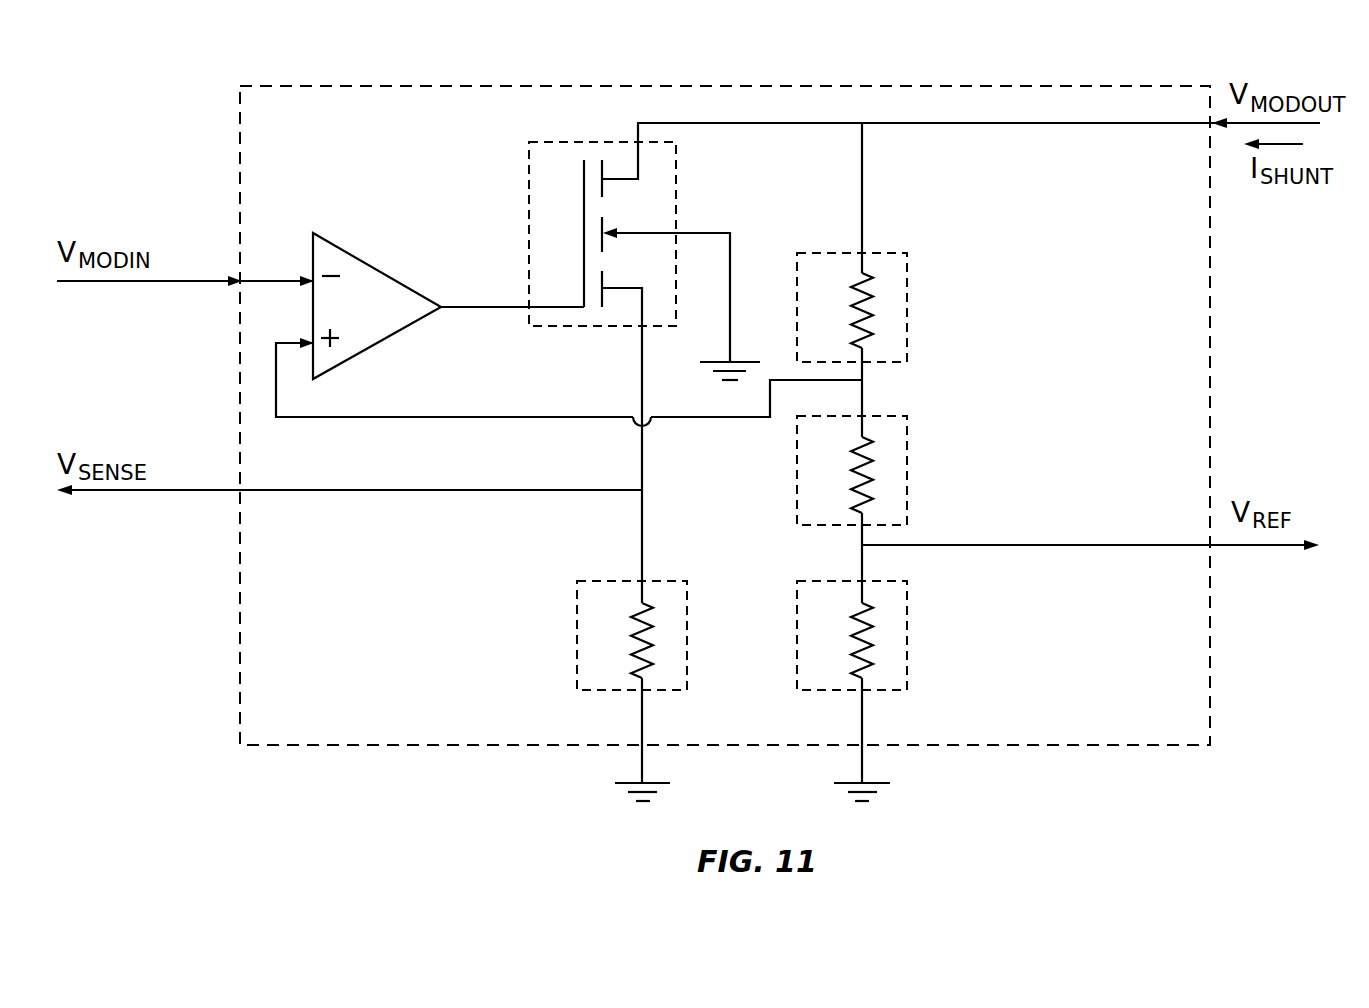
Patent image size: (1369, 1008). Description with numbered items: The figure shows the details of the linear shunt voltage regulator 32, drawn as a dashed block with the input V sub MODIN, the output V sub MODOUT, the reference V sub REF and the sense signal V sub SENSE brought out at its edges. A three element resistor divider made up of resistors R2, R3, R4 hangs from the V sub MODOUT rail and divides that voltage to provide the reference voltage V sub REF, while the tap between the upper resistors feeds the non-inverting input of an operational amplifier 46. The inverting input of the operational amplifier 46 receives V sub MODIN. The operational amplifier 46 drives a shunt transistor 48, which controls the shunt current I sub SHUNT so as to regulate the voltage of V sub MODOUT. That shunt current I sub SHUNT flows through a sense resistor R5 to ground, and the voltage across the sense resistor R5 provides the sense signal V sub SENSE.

The linear shunt voltage regulator 32 is at (1159, 713).
The operational amplifier 46 is at (388, 317).
The shunt transistor 48 is at (572, 187).
The resistor R2 is at (840, 290).
The resistor R3 is at (840, 453).
The resistor R4 is at (840, 618).
The sense resistor R5 is at (620, 618).